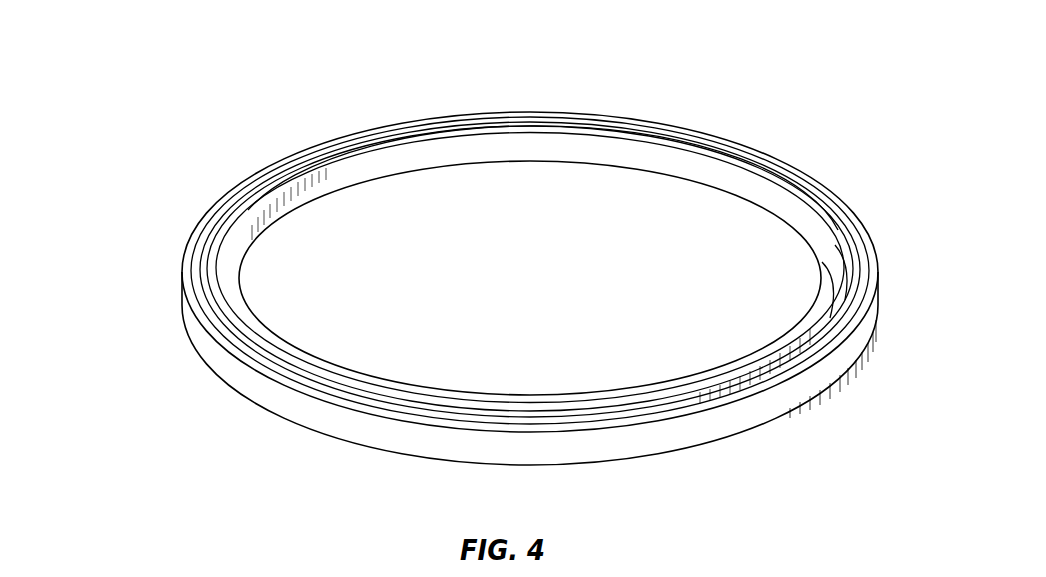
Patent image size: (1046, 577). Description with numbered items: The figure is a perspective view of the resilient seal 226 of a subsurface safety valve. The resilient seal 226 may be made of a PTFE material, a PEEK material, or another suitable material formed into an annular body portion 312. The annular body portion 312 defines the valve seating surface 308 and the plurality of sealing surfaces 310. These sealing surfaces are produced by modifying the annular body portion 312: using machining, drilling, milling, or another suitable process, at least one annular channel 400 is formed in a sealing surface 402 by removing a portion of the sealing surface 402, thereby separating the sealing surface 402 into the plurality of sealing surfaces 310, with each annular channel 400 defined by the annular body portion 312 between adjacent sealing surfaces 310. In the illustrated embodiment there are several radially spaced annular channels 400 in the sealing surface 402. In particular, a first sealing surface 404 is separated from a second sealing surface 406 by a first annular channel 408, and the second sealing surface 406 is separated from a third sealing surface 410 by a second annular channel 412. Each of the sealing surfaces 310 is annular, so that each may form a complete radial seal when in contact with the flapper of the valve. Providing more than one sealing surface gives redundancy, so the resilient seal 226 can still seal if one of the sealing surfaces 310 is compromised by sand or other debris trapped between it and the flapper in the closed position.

The resilient seal 226 is at (350, 72).
The sealing surface 402 is at (694, 110).
The annular body portion 312 is at (152, 204).
The valve seating surface 308 is at (702, 440).
The plurality of sealing surfaces 310 is at (740, 170).
The first sealing surface 404 is at (198, 236).
The second sealing surface 406 is at (246, 206).
The first annular channel 408 is at (200, 286).
The third sealing surface 410 is at (300, 183).
The second annular channel 412 is at (240, 318).
The annular channel 400 is at (832, 290).